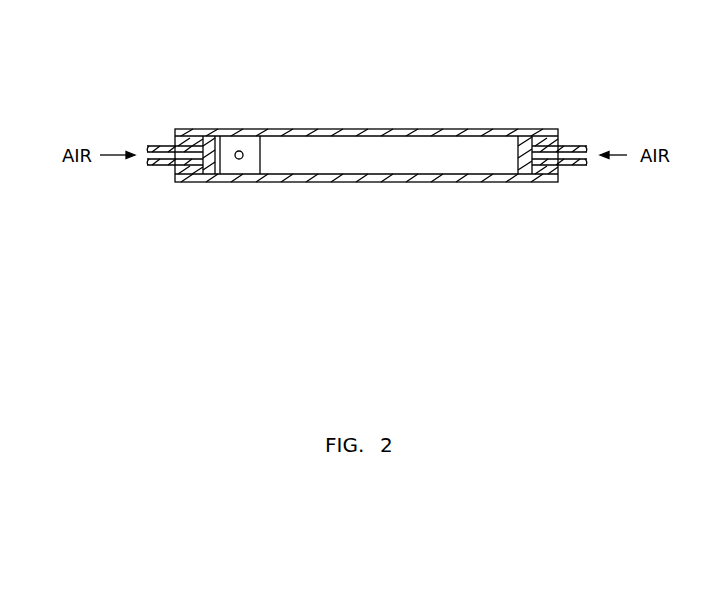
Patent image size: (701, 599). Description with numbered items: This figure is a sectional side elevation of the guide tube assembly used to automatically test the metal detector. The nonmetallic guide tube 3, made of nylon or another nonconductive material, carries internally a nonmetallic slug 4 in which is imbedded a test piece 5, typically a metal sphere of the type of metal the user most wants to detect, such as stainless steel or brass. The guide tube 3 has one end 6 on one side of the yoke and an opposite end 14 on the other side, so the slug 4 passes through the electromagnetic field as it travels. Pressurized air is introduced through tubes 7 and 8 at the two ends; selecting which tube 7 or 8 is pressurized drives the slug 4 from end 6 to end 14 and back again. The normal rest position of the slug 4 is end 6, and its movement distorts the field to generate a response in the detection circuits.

The guide tube 3 is at (372, 182).
The slug 4 is at (251, 164).
The test piece 5 is at (242, 152).
The end of tube 6 is at (183, 182).
The tube 7 is at (192, 131).
The tube 8 is at (558, 182).
The end of tube 14 is at (542, 129).